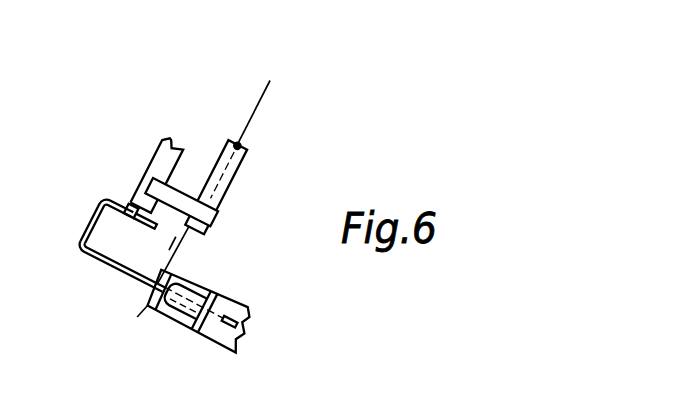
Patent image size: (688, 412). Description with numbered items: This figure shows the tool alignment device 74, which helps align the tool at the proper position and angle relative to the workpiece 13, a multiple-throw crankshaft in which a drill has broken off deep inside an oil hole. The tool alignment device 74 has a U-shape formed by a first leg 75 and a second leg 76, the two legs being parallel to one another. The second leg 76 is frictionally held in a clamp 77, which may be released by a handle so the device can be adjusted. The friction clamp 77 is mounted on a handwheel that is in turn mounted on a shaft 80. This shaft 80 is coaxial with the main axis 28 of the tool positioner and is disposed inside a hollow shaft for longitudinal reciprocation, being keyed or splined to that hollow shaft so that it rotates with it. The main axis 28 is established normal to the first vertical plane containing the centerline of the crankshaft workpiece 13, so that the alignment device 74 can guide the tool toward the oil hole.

The workpiece 13 is at (229, 296).
The main axis 28 is at (257, 106).
The tool alignment device 74 is at (96, 213).
The first leg 75 is at (132, 275).
The second leg 76 is at (117, 218).
The clamp 77 is at (137, 221).
The shaft 80 is at (241, 157).